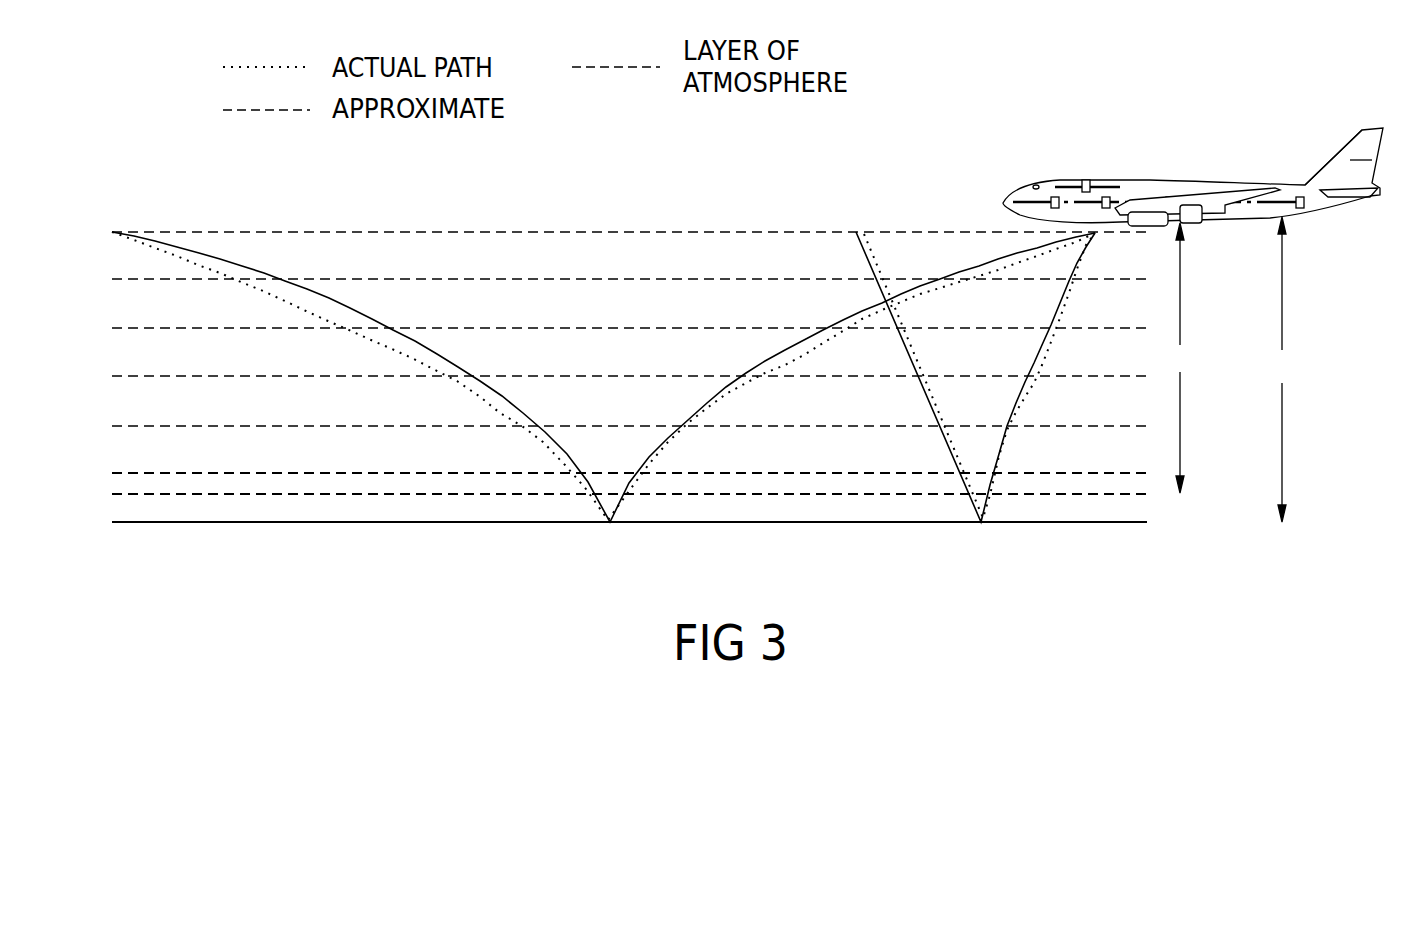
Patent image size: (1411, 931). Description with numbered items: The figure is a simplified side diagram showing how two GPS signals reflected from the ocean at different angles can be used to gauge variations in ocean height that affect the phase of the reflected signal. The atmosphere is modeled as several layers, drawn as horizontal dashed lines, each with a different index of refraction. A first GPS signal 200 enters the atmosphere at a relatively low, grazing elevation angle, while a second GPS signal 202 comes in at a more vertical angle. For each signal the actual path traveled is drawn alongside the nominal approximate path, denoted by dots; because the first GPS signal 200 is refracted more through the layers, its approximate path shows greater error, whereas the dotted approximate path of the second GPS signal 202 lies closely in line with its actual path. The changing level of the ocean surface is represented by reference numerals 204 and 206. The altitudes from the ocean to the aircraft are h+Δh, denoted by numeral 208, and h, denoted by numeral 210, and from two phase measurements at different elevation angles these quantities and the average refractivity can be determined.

The first GPS signal 200 is at (362, 303).
The second GPS signal 202 is at (852, 254).
The ocean surface level 204 is at (1052, 494).
The ocean surface level 206 is at (1002, 522).
The altitude h+Δh 208 is at (1282, 472).
The altitude h 210 is at (1180, 457).